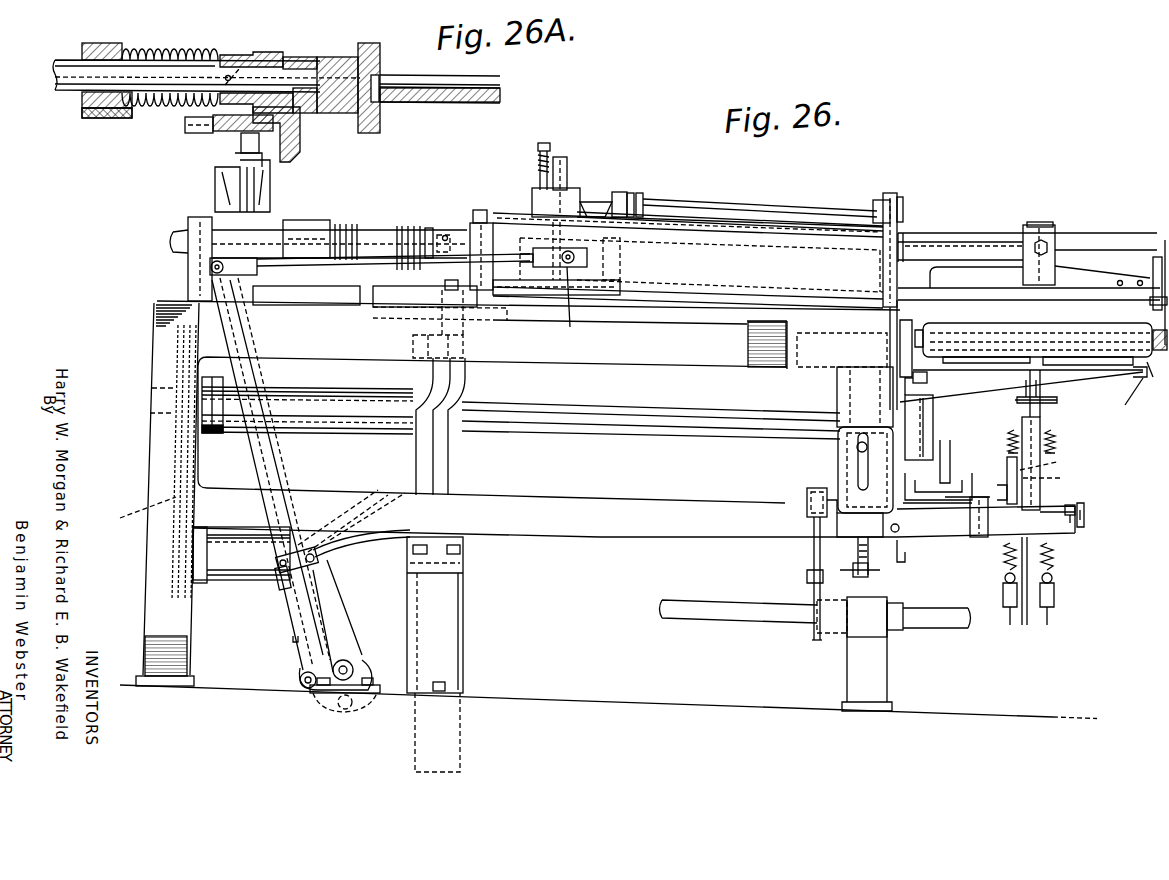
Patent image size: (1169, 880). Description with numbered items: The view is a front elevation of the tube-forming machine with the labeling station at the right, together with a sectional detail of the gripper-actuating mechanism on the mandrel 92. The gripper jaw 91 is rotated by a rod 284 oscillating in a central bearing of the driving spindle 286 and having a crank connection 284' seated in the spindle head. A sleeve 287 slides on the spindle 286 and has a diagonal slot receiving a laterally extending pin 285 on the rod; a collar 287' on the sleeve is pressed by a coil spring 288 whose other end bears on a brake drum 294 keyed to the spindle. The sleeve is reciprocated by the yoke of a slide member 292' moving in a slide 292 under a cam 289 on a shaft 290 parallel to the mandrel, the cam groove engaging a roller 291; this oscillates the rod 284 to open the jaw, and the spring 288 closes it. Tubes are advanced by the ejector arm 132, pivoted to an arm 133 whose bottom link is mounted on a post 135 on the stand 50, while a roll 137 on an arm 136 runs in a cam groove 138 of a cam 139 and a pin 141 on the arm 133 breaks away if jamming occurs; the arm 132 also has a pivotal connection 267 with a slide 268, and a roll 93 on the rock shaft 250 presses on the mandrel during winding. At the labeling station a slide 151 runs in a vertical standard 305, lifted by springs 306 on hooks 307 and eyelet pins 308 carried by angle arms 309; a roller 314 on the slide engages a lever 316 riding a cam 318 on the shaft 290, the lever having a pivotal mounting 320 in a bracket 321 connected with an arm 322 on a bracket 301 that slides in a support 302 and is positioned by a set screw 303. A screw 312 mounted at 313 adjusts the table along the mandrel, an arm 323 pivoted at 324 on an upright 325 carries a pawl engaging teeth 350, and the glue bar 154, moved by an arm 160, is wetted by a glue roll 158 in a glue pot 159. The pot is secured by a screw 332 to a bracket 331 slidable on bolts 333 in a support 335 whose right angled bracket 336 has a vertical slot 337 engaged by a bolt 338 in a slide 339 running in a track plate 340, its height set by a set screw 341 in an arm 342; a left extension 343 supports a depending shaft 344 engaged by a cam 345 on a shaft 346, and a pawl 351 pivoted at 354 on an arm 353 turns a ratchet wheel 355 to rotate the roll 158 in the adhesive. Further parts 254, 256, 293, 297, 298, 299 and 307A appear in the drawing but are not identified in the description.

In FIG. 26A, the stand 50 is at (322, 110).
In FIG. 26, the stand 50 is at (156, 442).
In FIG. 26A, the gripper jaw 91 is at (478, 80).
In FIG. 26A, the mandrel 92 is at (468, 104).
In FIG. 26, the mandrel 92 is at (1085, 252).
In FIG. 26, the roll 93 is at (698, 214).
In FIG. 26, the ejector arm 132 is at (370, 263).
In FIG. 26, the arm 133 is at (278, 480).
In FIG. 26, the post 135 is at (360, 676).
In FIG. 26, the arm 136 is at (350, 648).
In FIG. 26, the roll 137 is at (320, 568).
In FIG. 26, the cam groove 138 is at (330, 558).
In FIG. 26, the cam 139 is at (345, 542).
In FIG. 26, the pin 141 is at (280, 588).
In FIG. 26, the slide 151 is at (1020, 413).
In FIG. 26, the glue bar 154 is at (990, 292).
In FIG. 26, the glue roll 158 is at (1085, 315).
In FIG. 26, the glue pot 159 is at (1139, 394).
In FIG. 26, the arm 160 is at (938, 240).
In FIG. 26, the rock shaft 250 is at (672, 193).
In FIG. 26, the screw 254 is at (550, 150).
In FIG. 26, the post 256 is at (567, 158).
In FIG. 26, the pivotal connection 267 is at (571, 300).
In FIG. 26, the slide 268 is at (620, 260).
In FIG. 26A, the rod 284 is at (331, 88).
In FIG. 26A, the crank connection 284' is at (404, 106).
In FIG. 26A, the pin 285 is at (230, 80).
In FIG. 26, the pin 285 is at (448, 237).
In FIG. 26A, the driving spindle 286 is at (70, 60).
In FIG. 26, the driving spindle 286 is at (257, 240).
In FIG. 26A, the sleeve 287 is at (276, 69).
In FIG. 26, the sleeve 287 is at (443, 229).
In FIG. 26A, the collar 287' is at (247, 45).
In FIG. 26A, the coil spring 288 is at (160, 52).
In FIG. 26, the coil spring 288 is at (408, 224).
In FIG. 26, the cam 289 is at (470, 390).
In FIG. 26, the shaft 290 is at (560, 410).
In FIG. 26, the roller 291 is at (466, 342).
In FIG. 26A, the slide 292 is at (216, 139).
In FIG. 26, the slide 292 is at (440, 304).
In FIG. 26A, the slide member 292' is at (191, 150).
In FIG. 26, the block 293 is at (343, 303).
In FIG. 26A, the brake drum 294 is at (100, 118).
In FIG. 26, the brake drum 294 is at (318, 222).
In FIG. 26, the slide 297 is at (225, 570).
In FIG. 26, the chain 298 is at (148, 462).
In FIG. 26, the housing 299 is at (460, 620).
In FIG. 26, the bracket 301 is at (953, 528).
In FIG. 26, the support 302 is at (902, 562).
In FIG. 26, the set screw 303 is at (900, 529).
In FIG. 26, the vertical standard 305 is at (1043, 413).
In FIG. 26, the springs 306 is at (1058, 448).
In FIG. 26, the hooks 307 is at (1057, 433).
In FIG. 26, the spring 307A is at (1004, 438).
In FIG. 26, the eyelet pins 308 is at (1004, 583).
In FIG. 26, the angle arms 309 is at (1004, 605).
In FIG. 26, the screw 312 is at (1084, 513).
In FIG. 26, the screw mounting 313 is at (1079, 502).
In FIG. 26, the roller 314 is at (1007, 476).
In FIG. 26, the lever 316 is at (945, 461).
In FIG. 26, the cam 318 is at (933, 413).
In FIG. 26, the pivotal mounting 320 is at (938, 486).
In FIG. 26, the bracket 321 is at (937, 506).
In FIG. 26, the arm 322 is at (988, 521).
In FIG. 26, the arm 323 is at (1057, 463).
In FIG. 26, the pivot 324 is at (967, 503).
In FIG. 26, the upright 325 is at (1055, 525).
In FIG. 26, the bracket 331 is at (1097, 372).
In FIG. 26, the screw 332 is at (1042, 392).
In FIG. 26, the bolts 333 is at (928, 386).
In FIG. 26, the support 335 is at (902, 360).
In FIG. 26, the right angled bracket 336 is at (838, 460).
In FIG. 26, the vertical slot 337 is at (858, 474).
In FIG. 26, the bolt 338 is at (857, 447).
In FIG. 26, the slide 339 is at (858, 412).
In FIG. 26, the vertical track plate 340 is at (856, 375).
In FIG. 26, the set screw 341 is at (860, 577).
In FIG. 26, the arm 342 is at (837, 530).
In FIG. 26, the left extension 343 is at (807, 497).
In FIG. 26, the depending shaft 344 is at (814, 556).
In FIG. 26, the cam 345 is at (812, 634).
In FIG. 26, the shaft 346 is at (750, 612).
In FIG. 26, the teeth 350 is at (1057, 476).
In FIG. 26, the pawl 351 is at (1157, 318).
In FIG. 26, the arm 353 is at (1168, 235).
In FIG. 26, the pivot 354 is at (1146, 299).
In FIG. 26, the ratchet wheel 355 is at (1153, 377).